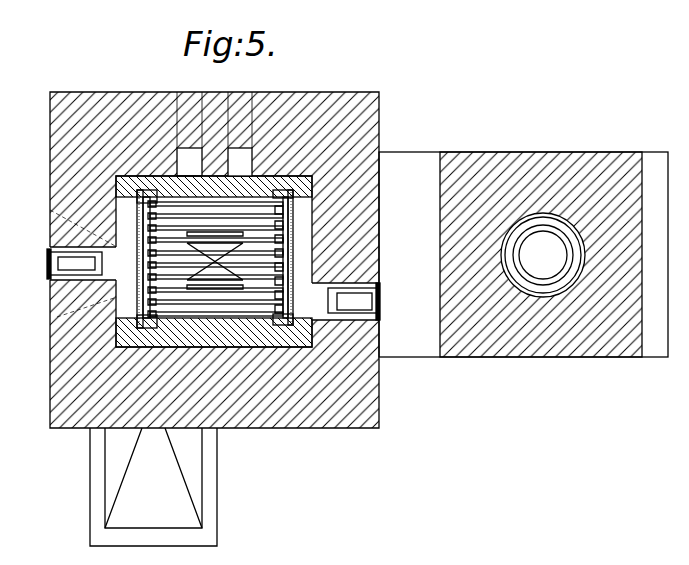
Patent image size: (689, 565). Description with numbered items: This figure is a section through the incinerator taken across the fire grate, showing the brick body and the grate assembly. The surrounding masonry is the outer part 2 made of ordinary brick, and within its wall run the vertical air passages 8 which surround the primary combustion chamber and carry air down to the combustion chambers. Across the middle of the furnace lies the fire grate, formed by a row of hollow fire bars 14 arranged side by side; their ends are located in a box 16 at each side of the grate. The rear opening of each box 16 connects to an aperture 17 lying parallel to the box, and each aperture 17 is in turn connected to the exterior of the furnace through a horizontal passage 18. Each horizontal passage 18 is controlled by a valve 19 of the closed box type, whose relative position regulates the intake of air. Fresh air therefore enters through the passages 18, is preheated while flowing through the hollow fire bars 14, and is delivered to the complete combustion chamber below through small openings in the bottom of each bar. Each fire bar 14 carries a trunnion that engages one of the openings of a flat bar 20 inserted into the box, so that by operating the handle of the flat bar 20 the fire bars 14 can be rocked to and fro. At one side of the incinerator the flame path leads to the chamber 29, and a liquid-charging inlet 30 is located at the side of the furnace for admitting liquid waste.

The outer part 2 is at (214, 260).
The vertical air passage 8 is at (240, 162).
The hollow fire bar 14 is at (147, 231).
The box 16 is at (140, 323).
The aperture 17 is at (297, 268).
The horizontal passage 18 is at (212, 283).
The valve 19 is at (48, 262).
The flat bar 20 is at (379, 266).
The chamber 29 is at (543, 255).
The liquid-charging inlet 30 is at (153, 487).